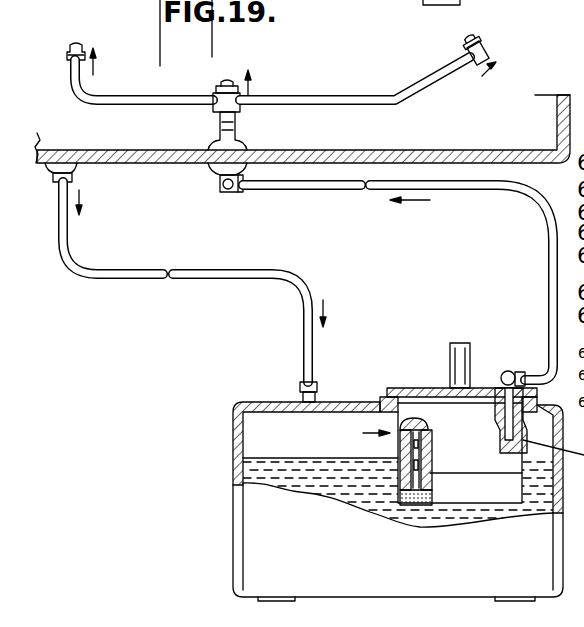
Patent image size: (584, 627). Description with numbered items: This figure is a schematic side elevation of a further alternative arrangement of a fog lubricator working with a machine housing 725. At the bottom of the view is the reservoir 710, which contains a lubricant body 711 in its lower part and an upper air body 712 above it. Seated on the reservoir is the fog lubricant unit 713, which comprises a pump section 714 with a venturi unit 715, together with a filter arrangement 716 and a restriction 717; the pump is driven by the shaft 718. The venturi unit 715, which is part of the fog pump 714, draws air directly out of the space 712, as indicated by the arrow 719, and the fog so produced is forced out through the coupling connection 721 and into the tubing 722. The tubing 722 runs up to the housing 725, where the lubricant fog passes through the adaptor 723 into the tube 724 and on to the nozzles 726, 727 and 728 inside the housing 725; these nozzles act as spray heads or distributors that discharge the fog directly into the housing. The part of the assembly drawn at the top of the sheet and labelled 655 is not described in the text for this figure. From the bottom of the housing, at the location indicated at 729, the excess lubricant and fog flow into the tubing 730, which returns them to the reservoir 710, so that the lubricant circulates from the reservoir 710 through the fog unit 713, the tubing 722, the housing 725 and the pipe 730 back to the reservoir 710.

The housing 655 is at (437, 5).
The reservoir 710 is at (233, 437).
The lubricant body 711 is at (308, 488).
The upper air body 712 is at (262, 452).
The fog lubricant unit 713 is at (394, 388).
The pump section 714 is at (440, 427).
The venturi unit 715 is at (408, 427).
The filter arrangement 716 is at (460, 493).
The restriction 717 is at (452, 460).
The shaft 718 is at (486, 338).
The arrow 719 is at (380, 433).
The coupling connection 721 is at (510, 370).
The tubing 722 is at (398, 282).
The adaptor 723 is at (222, 193).
The tube 724 is at (240, 128).
The housing 725 is at (168, 163).
The nozzle 726 is at (77, 45).
The nozzle 727 is at (228, 80).
The nozzle 728 is at (492, 50).
The bottom of the reservoir 729 is at (75, 172).
The tubing 730 is at (62, 215).